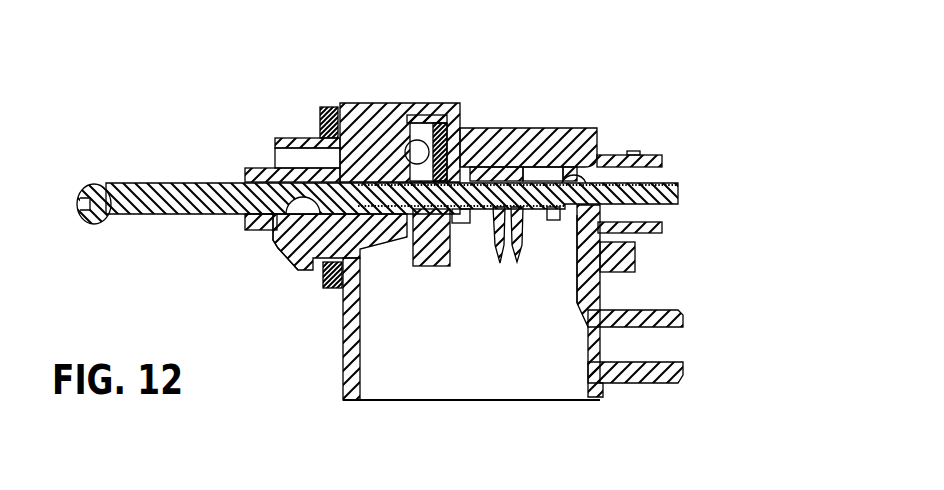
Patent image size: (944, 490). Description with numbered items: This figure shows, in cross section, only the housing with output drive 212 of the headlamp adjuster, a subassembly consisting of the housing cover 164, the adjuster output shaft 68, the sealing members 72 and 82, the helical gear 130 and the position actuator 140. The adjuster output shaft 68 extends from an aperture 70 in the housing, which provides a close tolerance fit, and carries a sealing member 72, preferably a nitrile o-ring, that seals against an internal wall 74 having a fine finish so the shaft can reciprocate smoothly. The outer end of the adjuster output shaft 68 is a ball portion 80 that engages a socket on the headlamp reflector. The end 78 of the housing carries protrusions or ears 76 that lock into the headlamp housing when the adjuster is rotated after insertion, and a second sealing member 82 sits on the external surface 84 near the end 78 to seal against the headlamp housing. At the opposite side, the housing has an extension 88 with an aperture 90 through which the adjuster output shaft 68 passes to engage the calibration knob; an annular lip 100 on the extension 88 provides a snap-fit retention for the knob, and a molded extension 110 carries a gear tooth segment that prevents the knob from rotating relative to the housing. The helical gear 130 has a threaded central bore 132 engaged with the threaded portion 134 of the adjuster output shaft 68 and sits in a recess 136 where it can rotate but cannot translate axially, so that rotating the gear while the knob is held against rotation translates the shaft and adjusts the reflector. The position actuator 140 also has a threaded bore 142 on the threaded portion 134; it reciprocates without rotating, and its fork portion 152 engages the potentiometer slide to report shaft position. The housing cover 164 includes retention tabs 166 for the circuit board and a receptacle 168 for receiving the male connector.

The adjuster output shaft 68 is at (196, 175).
The aperture 70 is at (228, 213).
The sealing member 72 is at (310, 167).
The internal wall 74 is at (277, 233).
The protrusions or ears 76 is at (305, 268).
The end of the housing 78 is at (280, 252).
The ball portion 80 is at (100, 214).
The sealing member 82 is at (316, 93).
The external surface 84 is at (313, 137).
The extension 88 is at (667, 139).
The aperture 90 is at (597, 128).
The annular lip 100 is at (631, 152).
The molded extension 110 is at (623, 261).
The helical gear 130 is at (430, 105).
The threaded central bore 132 is at (401, 250).
The threaded portion 134 is at (490, 128).
The recess 136 is at (402, 116).
The position actuator 140 is at (509, 153).
The threaded bore 142 is at (483, 211).
The fork portion 152 is at (530, 263).
The housing cover 164 is at (548, 112).
The retention tabs 166 is at (561, 221).
The receptacle 168 is at (650, 402).
The housing with output drive 212 is at (326, 420).